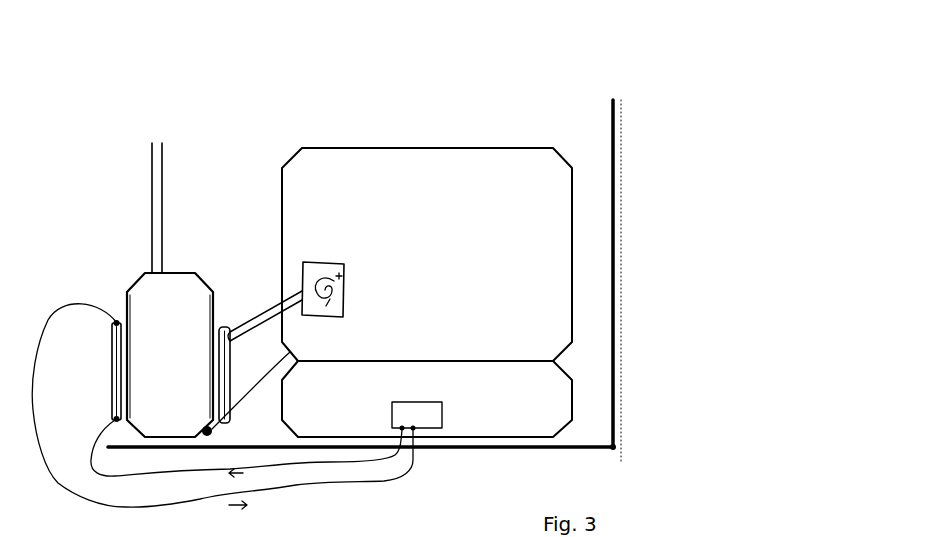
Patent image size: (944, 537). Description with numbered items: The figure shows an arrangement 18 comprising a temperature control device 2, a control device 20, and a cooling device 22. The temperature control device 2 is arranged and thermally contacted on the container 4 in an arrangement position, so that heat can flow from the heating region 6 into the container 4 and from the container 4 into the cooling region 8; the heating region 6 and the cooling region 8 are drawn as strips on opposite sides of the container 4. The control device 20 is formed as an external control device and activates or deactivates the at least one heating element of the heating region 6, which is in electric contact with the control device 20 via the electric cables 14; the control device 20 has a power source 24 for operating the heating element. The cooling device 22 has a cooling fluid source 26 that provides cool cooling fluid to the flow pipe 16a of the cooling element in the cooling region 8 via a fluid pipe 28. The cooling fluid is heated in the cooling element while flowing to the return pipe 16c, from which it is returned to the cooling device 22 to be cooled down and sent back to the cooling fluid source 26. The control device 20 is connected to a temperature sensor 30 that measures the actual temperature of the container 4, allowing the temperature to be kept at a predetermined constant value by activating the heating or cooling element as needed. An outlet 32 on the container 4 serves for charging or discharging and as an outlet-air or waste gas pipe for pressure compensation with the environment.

The arrangement 18 is at (99, 53).
The temperature control device 2 is at (112, 418).
The container 4 is at (176, 323).
The heating region 6 is at (231, 340).
The cooling region 8 is at (112, 328).
The electric cables 14 is at (266, 313).
The flow pipe 16a is at (120, 418).
The return pipe 16c is at (118, 322).
The control device 20 is at (334, 186).
The cooling device 22 is at (334, 396).
The power source 24 is at (345, 302).
The cooling fluid source 26 is at (442, 412).
The fluid pipe 28 is at (172, 470).
The temperature sensor 30 is at (206, 426).
The outlet 32 is at (151, 197).